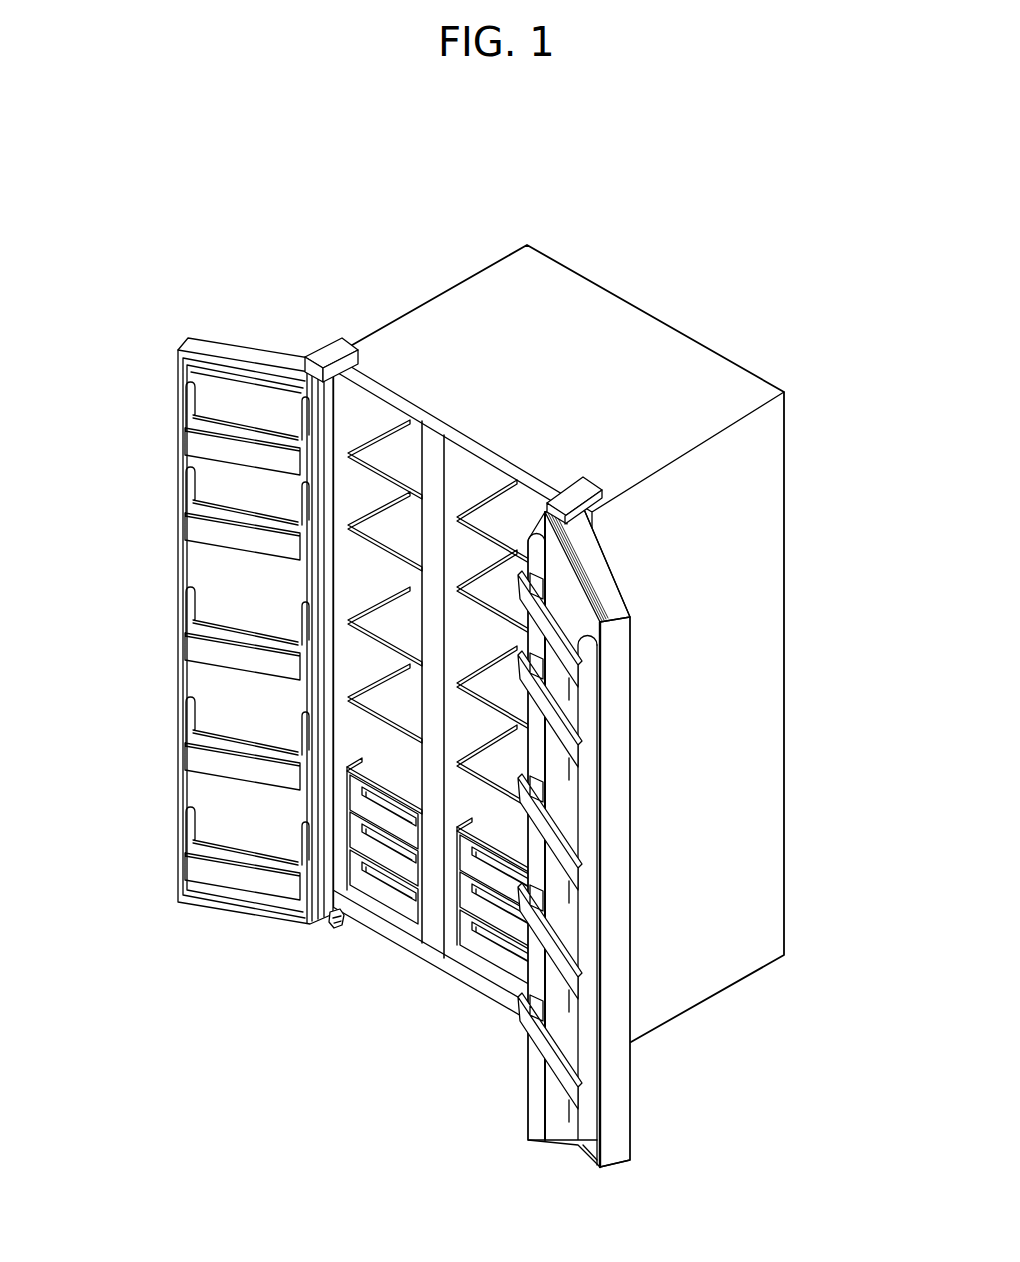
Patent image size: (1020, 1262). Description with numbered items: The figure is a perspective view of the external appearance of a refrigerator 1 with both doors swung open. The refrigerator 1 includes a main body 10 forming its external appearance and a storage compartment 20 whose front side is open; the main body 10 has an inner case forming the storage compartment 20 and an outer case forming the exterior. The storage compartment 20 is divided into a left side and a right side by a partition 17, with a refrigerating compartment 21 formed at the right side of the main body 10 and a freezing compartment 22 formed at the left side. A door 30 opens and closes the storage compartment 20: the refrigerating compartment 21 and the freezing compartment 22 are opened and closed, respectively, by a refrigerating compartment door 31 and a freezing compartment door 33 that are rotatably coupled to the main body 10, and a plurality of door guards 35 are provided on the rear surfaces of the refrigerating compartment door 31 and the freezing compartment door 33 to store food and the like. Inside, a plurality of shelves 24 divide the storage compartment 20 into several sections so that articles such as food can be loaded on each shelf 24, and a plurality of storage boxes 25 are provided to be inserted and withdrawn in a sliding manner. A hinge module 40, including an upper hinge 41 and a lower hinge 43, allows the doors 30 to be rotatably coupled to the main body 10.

The refrigerator 1 is at (582, 175).
The main body 10 is at (680, 323).
The partition 17 is at (430, 447).
The storage compartment 20 is at (132, 655).
The refrigerating compartment 21 is at (474, 748).
The freezing compartment 22 is at (278, 662).
The shelf 24 is at (370, 525).
The storage box 25 is at (357, 792).
The door 30 is at (132, 533).
The refrigerating compartment door 31 is at (607, 690).
The freezing compartment door 33 is at (237, 631).
The door guard 35 is at (194, 444).
The hinge module 40 is at (437, 651).
The upper hinge 41 is at (330, 346).
The lower hinge 43 is at (331, 930).